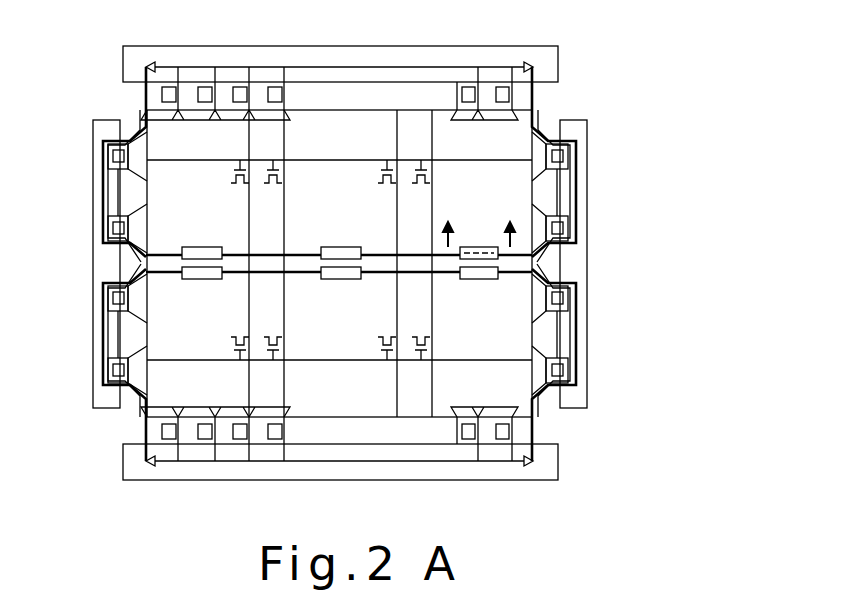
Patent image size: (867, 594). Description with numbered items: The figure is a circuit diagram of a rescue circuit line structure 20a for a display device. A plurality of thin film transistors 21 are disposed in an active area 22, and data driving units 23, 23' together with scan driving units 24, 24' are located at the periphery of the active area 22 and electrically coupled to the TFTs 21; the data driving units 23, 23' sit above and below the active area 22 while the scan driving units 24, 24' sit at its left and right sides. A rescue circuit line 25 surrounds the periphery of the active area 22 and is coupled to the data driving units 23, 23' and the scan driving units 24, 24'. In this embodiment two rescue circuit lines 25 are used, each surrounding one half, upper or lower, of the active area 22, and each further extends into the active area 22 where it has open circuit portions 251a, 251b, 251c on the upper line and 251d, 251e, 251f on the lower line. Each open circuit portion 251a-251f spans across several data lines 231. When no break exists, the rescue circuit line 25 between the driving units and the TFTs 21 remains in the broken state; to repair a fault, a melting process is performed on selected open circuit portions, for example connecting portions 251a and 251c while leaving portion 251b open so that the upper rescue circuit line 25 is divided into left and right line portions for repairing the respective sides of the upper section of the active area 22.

The circuit line structure 20a is at (628, 57).
The thin film transistor 21 is at (282, 182).
The active area 22 is at (352, 149).
The data driving unit 23 is at (340, 46).
The data driving unit 23' is at (340, 480).
The scan driving unit 24 is at (76, 264).
The scan driving unit 24' is at (605, 264).
The rescue circuit line 25 is at (535, 93).
The data line 231 is at (285, 193).
The open circuit portion 251a is at (195, 247).
The open circuit portion 251b is at (356, 247).
The open circuit portion 251c is at (483, 247).
The open circuit portion 251d is at (197, 280).
The open circuit portion 251e is at (336, 280).
The open circuit portion 251f is at (480, 280).